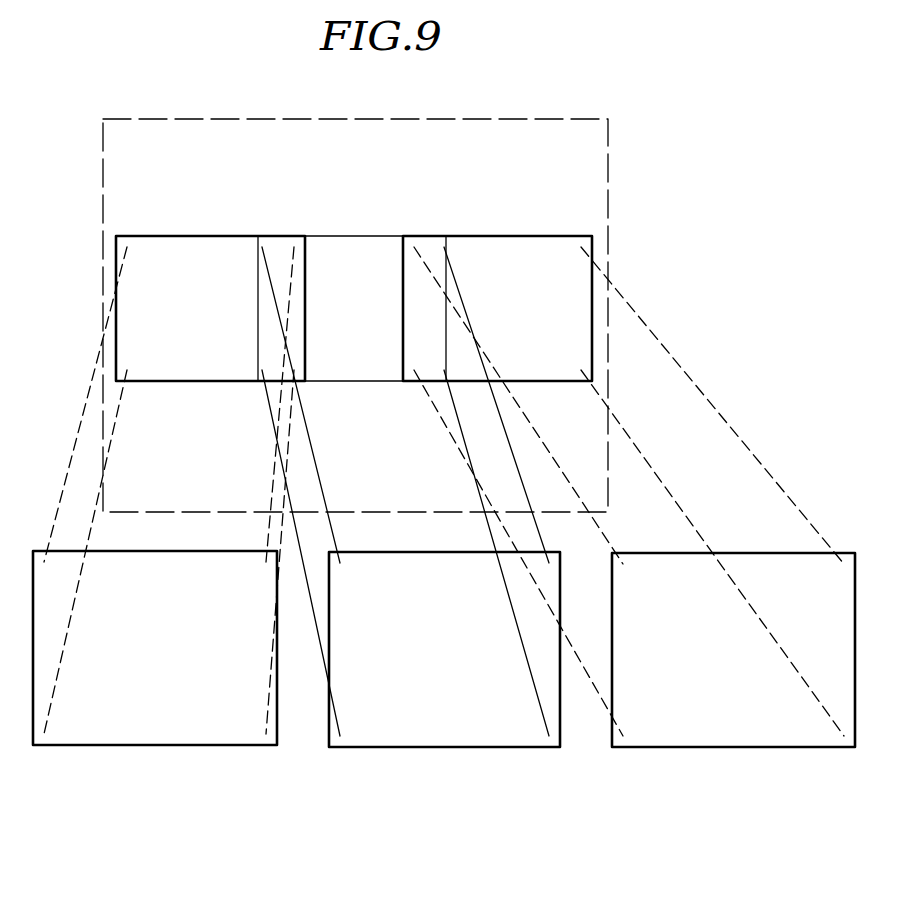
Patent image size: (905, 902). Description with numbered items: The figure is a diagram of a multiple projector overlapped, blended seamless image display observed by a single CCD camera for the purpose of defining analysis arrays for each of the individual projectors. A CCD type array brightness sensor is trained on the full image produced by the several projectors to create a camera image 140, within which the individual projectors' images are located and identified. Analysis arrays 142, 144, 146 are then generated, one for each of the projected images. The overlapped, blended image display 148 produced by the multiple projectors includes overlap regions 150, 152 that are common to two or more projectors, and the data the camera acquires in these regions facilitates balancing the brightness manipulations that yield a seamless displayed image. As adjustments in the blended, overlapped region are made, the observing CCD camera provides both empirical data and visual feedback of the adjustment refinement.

The camera image 140 is at (572, 118).
The analysis array 142 is at (240, 551).
The analysis array 144 is at (458, 552).
The analysis array 146 is at (805, 553).
The overlapped, blended image display 148 is at (345, 235).
The overlap region 150 is at (280, 235).
The overlap region 152 is at (420, 235).